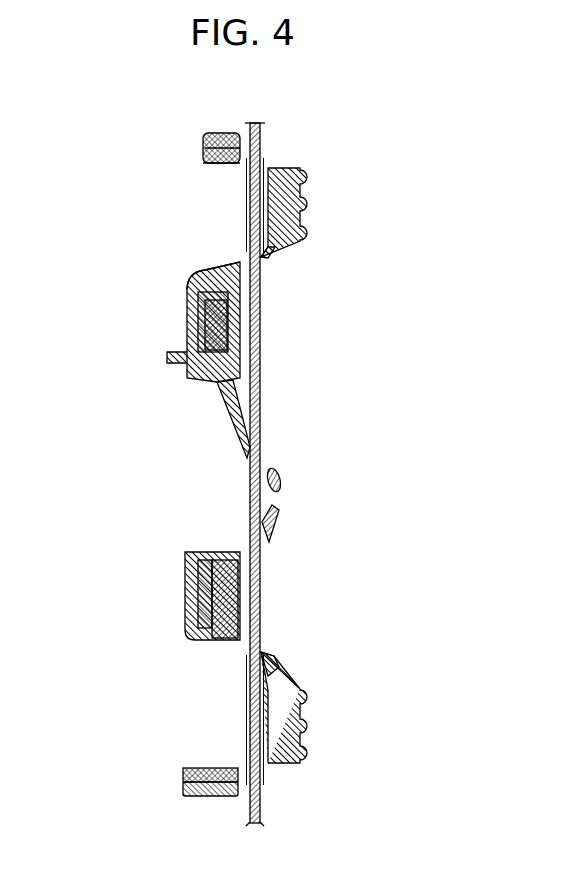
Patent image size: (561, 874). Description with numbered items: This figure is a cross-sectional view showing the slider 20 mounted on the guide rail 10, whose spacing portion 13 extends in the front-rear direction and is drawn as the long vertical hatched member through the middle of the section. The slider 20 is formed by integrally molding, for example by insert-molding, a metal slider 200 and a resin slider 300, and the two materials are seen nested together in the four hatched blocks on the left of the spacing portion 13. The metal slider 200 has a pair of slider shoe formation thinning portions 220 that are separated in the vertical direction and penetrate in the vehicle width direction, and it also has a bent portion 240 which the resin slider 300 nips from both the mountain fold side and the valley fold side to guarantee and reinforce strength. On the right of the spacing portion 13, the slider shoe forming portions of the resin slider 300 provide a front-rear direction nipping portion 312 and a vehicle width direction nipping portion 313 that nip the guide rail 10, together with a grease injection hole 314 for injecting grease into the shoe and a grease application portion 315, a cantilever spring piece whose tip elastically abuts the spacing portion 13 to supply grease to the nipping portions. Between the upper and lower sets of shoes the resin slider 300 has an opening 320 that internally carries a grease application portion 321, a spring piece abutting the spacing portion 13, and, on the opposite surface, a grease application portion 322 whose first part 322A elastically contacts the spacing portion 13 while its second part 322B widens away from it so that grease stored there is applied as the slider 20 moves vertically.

The guide rail 10 is at (321, 467).
The spacing portion 13 is at (263, 127).
The slider 20 is at (190, 463).
The metal slider 200 is at (214, 140).
The resin slider 300 is at (212, 150).
The slider shoe formation thinning portion 220 is at (215, 270).
The bent portion 240 is at (236, 312).
The front-rear direction nipping portion 312 is at (359, 471).
The vehicle width direction nipping portion 313 is at (359, 471).
The grease injection hole 314 is at (265, 165).
The grease application portion 315 is at (263, 254).
The opening 320 is at (230, 451).
The grease application portion 321 is at (238, 428).
The grease application portion 322 is at (340, 509).
The first part 322A is at (270, 533).
The second part 322B is at (275, 507).